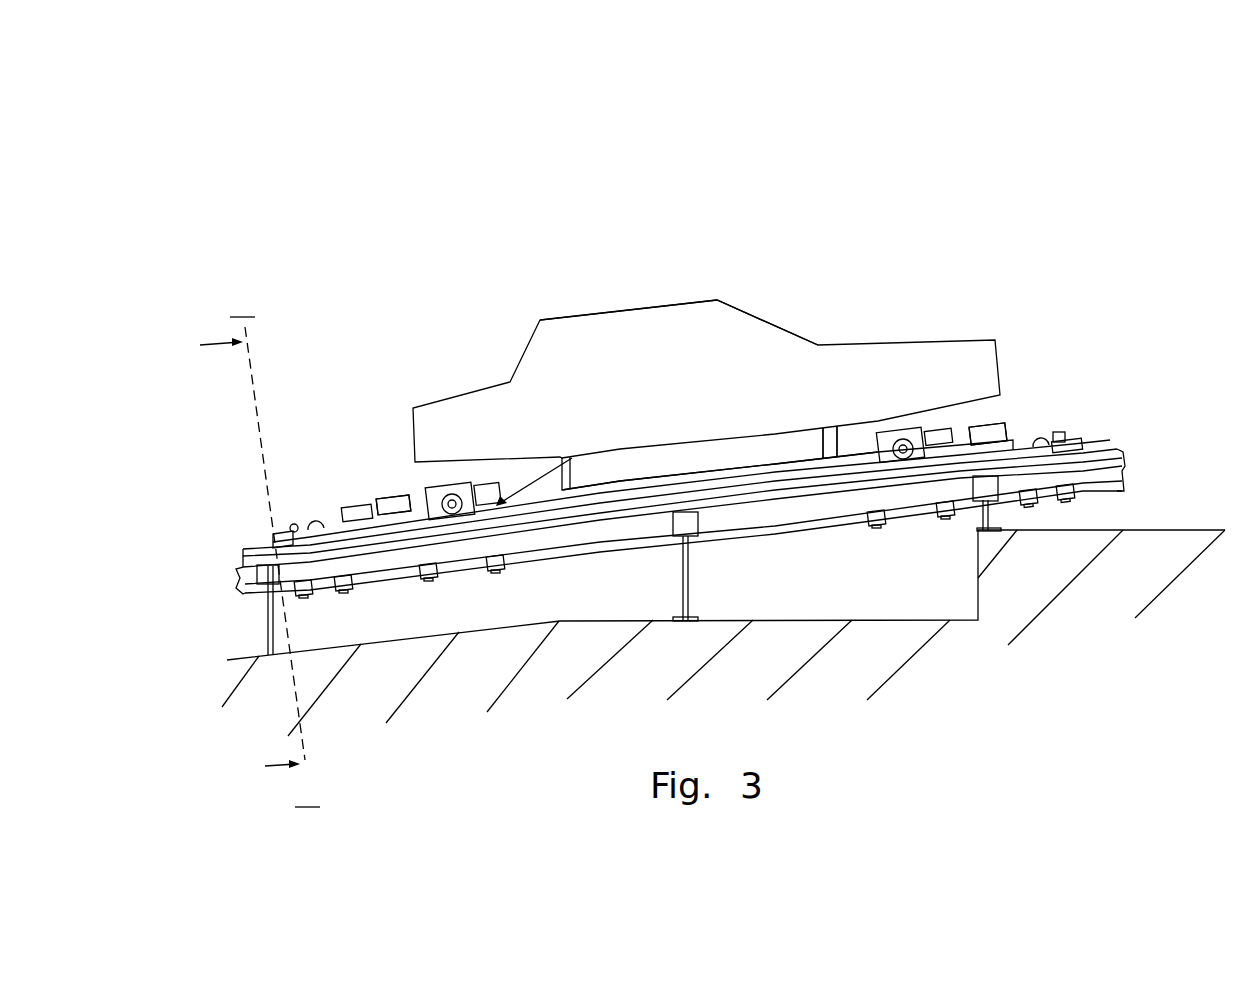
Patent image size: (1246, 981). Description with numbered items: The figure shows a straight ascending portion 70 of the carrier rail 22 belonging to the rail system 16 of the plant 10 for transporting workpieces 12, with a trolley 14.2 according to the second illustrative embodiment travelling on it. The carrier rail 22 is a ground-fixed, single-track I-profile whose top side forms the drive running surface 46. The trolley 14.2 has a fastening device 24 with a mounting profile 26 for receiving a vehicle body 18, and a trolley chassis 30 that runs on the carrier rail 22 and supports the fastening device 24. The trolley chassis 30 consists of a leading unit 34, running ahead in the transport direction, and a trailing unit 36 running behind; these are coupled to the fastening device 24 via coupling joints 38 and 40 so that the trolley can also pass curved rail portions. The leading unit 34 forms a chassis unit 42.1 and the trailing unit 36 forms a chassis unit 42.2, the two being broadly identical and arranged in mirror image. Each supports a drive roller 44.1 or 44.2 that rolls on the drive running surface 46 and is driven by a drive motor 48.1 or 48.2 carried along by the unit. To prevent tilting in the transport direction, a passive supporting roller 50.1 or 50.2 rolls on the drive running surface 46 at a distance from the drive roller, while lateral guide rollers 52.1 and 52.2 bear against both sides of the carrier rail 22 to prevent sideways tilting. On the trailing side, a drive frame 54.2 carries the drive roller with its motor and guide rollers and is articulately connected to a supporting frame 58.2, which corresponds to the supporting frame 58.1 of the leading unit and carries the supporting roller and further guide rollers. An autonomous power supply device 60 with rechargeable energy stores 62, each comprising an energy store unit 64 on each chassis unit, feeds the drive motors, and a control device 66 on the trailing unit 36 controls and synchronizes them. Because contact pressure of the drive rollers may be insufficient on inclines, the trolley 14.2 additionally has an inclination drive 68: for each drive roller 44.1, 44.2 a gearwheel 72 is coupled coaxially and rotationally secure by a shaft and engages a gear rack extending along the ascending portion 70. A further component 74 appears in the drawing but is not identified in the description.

The plant 10 is at (1081, 70).
The workpieces 12 is at (657, 303).
The trolley 14.2 is at (1006, 252).
The rail system 16 is at (205, 596).
The vehicle bodies 18 is at (700, 312).
The carrier rail 22 is at (234, 533).
The fastening device 24 is at (638, 474).
The mounting profile 26 is at (722, 473).
The trolley chassis 30 is at (1108, 471).
The leading unit 34 is at (978, 390).
The trailing unit 36 is at (431, 482).
The coupling joint 38 is at (853, 461).
The coupling joint 40 is at (498, 506).
The chassis unit 42.1 is at (1093, 393).
The chassis unit 42.2 is at (467, 483).
The drive roller 44.1 is at (893, 430).
The drive roller 44.2 is at (437, 550).
The drive running surface 46 is at (268, 537).
The drive motor 48.1 is at (937, 430).
The drive motor 48.2 is at (488, 482).
The supporting roller 50.1 is at (1070, 450).
The supporting roller 50.2 is at (317, 519).
The lateral guide rollers 52.1 is at (878, 528).
The lateral guide rollers 52.2 is at (308, 597).
The drive frame 54.2 is at (572, 458).
The supporting frame 58.1 is at (1028, 448).
The supporting frame 58.2 is at (293, 523).
The autonomous power supply device 60 is at (397, 411).
The rechargeable energy stores 62 is at (403, 486).
The energy store unit 64 is at (396, 512).
The control device 66 is at (360, 506).
The inclination drive 68 is at (905, 484).
The ascending portion 70 is at (766, 586).
The gearwheel 72 is at (880, 460).
The partition 74 is at (760, 464).